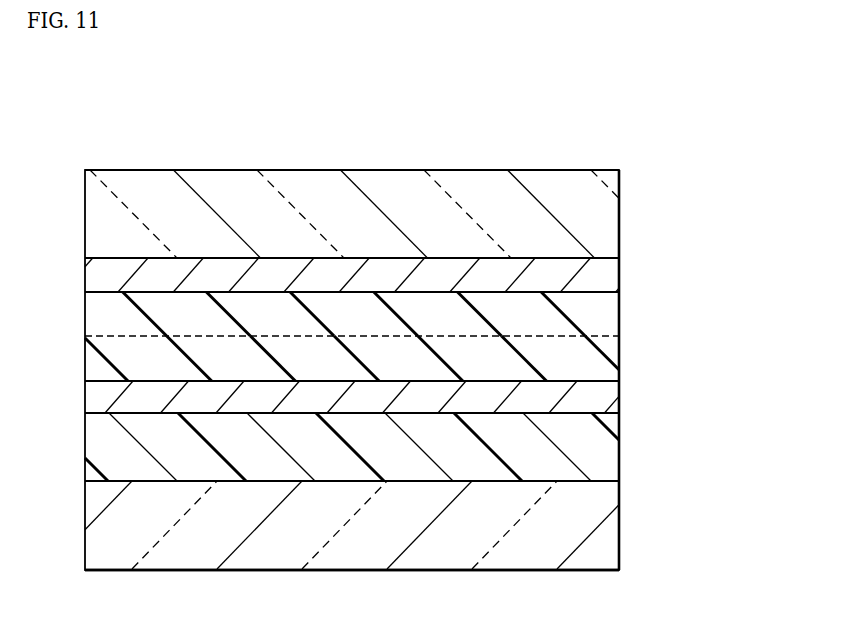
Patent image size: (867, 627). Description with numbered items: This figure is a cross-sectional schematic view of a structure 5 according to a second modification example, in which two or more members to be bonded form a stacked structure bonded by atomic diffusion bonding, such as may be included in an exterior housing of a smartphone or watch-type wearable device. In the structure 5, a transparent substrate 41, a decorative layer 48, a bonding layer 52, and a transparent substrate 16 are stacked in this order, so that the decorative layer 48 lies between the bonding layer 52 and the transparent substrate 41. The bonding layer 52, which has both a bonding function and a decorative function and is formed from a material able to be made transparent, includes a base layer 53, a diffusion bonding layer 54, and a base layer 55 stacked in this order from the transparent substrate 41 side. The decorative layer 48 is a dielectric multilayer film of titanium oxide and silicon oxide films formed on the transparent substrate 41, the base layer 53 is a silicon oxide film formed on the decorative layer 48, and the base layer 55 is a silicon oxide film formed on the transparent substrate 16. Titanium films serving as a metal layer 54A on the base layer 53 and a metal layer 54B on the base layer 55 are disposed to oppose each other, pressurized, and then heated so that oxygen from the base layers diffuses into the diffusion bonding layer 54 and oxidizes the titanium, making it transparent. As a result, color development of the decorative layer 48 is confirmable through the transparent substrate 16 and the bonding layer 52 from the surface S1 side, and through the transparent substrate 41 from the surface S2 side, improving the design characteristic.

The structure 5 is at (680, 112).
The surface S1 is at (587, 169).
The surface S2 is at (587, 572).
The transparent substrate 16 is at (612, 212).
The base layer 55 is at (612, 273).
The diffusion bonding layer 54 is at (698, 305).
The metal layer 54B is at (612, 318).
The metal layer 54A is at (612, 351).
The bonding layer 52 is at (746, 260).
The base layer 53 is at (612, 396).
The decorative layer 48 is at (612, 447).
The transparent substrate 41 is at (612, 524).